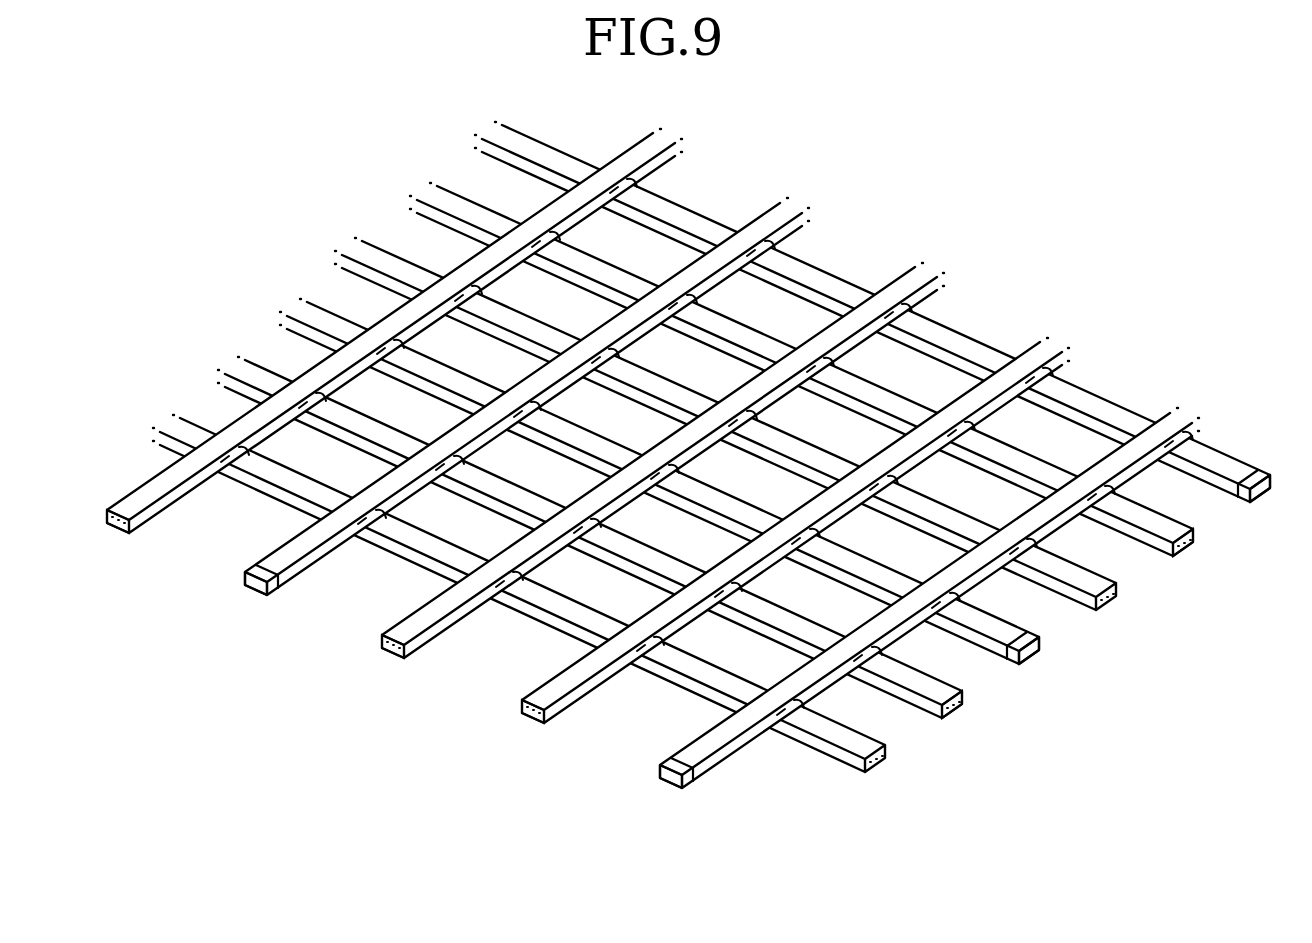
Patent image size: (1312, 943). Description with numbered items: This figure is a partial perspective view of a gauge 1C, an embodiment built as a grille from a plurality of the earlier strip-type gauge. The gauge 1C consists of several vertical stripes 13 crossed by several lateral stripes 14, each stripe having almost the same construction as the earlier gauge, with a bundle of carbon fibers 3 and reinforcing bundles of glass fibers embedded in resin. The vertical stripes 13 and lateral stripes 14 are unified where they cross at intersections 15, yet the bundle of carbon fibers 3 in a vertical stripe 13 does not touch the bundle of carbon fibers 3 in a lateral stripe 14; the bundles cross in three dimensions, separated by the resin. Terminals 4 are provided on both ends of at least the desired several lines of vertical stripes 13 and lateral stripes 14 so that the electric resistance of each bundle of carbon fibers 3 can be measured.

The gauge 1C is at (893, 172).
The bundle of carbon fibers 3 is at (110, 530).
The terminal 4 is at (1262, 482).
The vertical stripe 13 is at (877, 316).
The lateral stripe 14 is at (572, 166).
The intersection 15 is at (668, 304).